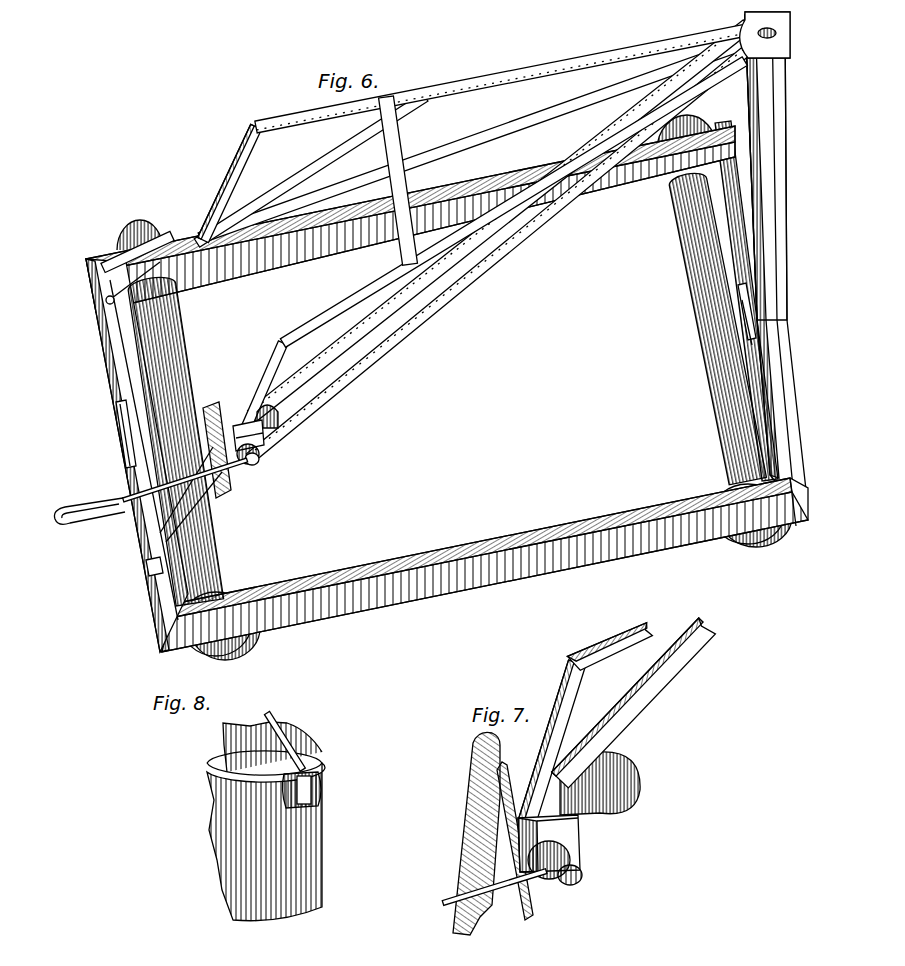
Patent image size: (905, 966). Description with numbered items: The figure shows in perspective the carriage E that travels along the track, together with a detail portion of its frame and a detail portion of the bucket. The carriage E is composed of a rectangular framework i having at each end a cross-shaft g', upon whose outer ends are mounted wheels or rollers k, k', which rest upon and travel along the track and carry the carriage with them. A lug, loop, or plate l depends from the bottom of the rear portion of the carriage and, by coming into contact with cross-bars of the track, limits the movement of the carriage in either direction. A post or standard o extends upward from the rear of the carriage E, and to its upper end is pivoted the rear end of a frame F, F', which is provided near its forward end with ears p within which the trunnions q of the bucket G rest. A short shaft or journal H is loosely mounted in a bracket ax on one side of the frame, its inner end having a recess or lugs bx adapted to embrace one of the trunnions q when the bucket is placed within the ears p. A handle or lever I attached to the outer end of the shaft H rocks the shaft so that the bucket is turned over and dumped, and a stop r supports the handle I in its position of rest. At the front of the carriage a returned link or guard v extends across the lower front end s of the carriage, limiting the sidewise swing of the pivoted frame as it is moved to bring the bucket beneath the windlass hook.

In FIG. 6, the carriage E is at (436, 333).
In FIG. 6, the rectangular framework i is at (447, 386).
In FIG. 6, the post or standard o is at (777, 108).
In FIG. 6, the wheels or rollers k is at (458, 433).
In FIG. 6, the wheel k' is at (687, 121).
In FIG. 6, the cross-shaft g' is at (447, 388).
In FIG. 6, the returned link or guard v is at (125, 433).
In FIG. 6, the lower front end of the carriage s is at (146, 569).
In FIG. 6, the lug, loop, or plate l is at (756, 330).
In FIG. 6, the bars F' is at (480, 247).
In FIG. 7, the bars F' is at (636, 703).
In FIG. 6, the frame F is at (500, 221).
In FIG. 6, the ears p is at (216, 228).
In FIG. 7, the ears p is at (529, 783).
In FIG. 6, the stop r is at (232, 486).
In FIG. 7, the stop r is at (476, 833).
In FIG. 6, the recess or lugs bx is at (267, 416).
In FIG. 7, the recess or lugs bx is at (600, 822).
In FIG. 6, the bracket ax is at (248, 435).
In FIG. 7, the bracket ax is at (574, 833).
In FIG. 6, the short shaft or journal H is at (262, 459).
In FIG. 7, the short shaft or journal H is at (584, 868).
In FIG. 6, the handle or lever I is at (96, 510).
In FIG. 7, the handle or lever I is at (498, 892).
In FIG. 8, the bucket G is at (266, 821).
In FIG. 8, the trunnions q is at (322, 790).